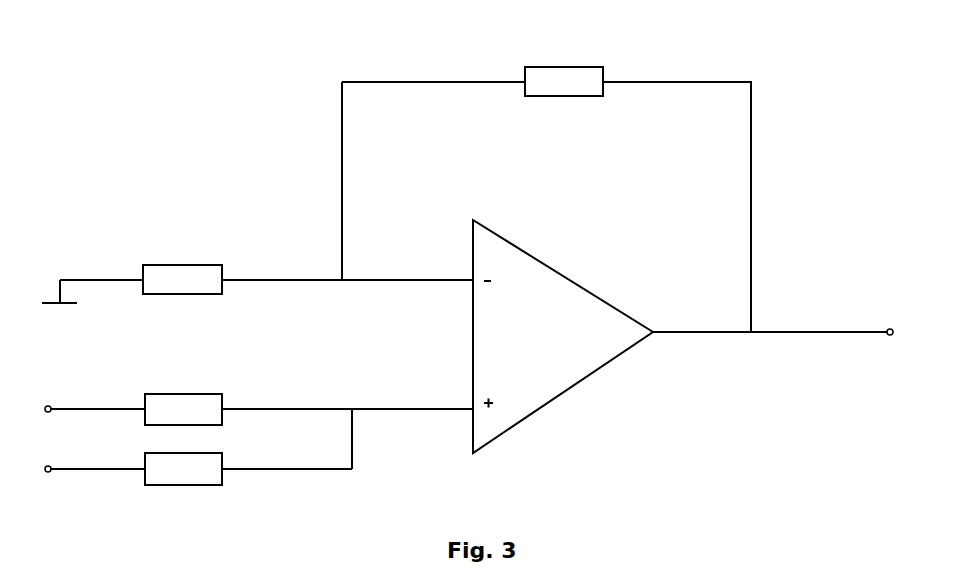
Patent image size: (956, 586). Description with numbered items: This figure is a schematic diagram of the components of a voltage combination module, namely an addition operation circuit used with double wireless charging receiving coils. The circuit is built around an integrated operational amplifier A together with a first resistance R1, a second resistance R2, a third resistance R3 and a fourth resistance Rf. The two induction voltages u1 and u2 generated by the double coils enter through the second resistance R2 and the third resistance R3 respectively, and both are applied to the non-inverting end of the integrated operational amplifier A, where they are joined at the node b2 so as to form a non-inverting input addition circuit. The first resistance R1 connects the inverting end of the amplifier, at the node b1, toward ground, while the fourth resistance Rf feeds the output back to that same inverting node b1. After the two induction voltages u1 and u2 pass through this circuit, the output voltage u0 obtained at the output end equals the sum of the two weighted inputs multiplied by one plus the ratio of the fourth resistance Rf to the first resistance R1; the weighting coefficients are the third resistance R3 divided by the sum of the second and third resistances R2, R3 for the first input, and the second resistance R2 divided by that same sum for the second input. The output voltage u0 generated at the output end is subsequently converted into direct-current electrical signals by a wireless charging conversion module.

The first resistance R1 is at (266, 266).
The second resistance R2 is at (262, 396).
The third resistance R3 is at (201, 489).
The fourth resistance Rf is at (546, 183).
The integrated operational amplifier A is at (563, 336).
The inverting input node b1 is at (341, 198).
The non-inverting input node b2 is at (350, 422).
The induction voltage u1 is at (34, 410).
The induction voltage u2 is at (34, 470).
The output voltage u0 is at (792, 333).